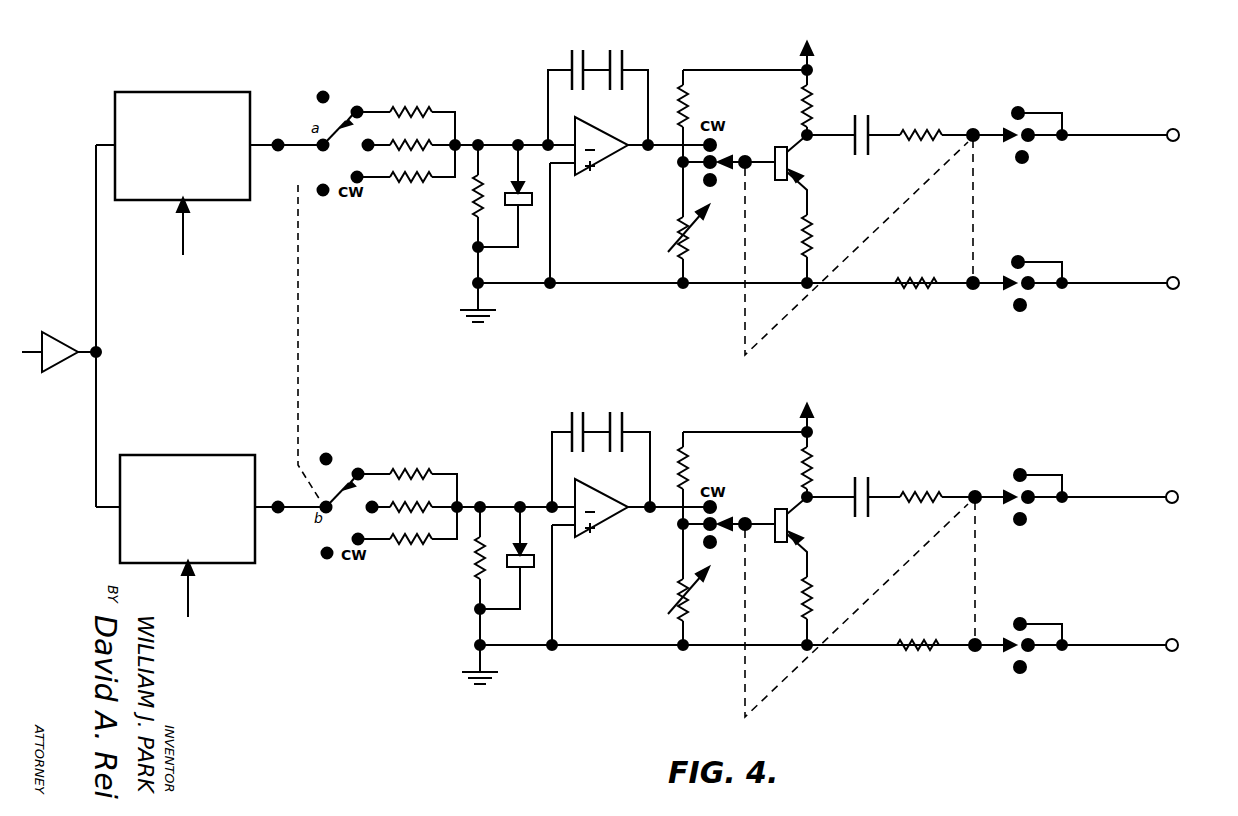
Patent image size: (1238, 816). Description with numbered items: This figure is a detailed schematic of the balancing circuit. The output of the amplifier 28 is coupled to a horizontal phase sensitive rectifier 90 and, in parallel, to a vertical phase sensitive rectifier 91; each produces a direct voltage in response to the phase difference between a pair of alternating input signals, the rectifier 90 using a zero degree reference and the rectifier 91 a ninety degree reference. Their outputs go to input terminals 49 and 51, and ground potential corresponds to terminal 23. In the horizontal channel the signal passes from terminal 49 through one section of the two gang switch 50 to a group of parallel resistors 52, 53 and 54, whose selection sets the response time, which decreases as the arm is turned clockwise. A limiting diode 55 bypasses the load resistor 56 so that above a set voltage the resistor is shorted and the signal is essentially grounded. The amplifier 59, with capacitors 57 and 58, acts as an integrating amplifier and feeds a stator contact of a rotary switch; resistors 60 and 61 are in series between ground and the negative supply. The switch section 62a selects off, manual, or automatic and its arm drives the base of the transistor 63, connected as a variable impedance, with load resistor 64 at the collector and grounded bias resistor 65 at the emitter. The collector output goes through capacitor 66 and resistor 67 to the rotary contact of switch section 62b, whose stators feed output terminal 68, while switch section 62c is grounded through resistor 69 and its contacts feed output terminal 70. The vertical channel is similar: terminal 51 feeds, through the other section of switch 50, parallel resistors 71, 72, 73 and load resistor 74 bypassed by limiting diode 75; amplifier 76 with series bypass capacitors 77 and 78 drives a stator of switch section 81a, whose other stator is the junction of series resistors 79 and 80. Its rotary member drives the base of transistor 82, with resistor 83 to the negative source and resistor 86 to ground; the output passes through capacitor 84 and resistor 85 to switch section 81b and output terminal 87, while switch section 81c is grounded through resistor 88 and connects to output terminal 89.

The ground terminal 23 is at (494, 313).
The amplifier 28 is at (60, 332).
The input terminal 49 is at (278, 140).
The two gang switch 50 is at (300, 178).
The input terminal 51 is at (278, 502).
The resistor 52 is at (428, 110).
The resistor 53 is at (428, 143).
The resistor 54 is at (412, 183).
The limiting diode 55 is at (515, 206).
The load resistor 56 is at (474, 205).
The capacitor 57 is at (571, 92).
The capacitor 58 is at (621, 92).
The amplifier 59 is at (604, 170).
The resistor 60 is at (687, 96).
The resistor 61 is at (675, 222).
The switch section 62a is at (748, 170).
The switch section 62b is at (1011, 149).
The switch section 62c is at (1008, 272).
The transistor 63 is at (789, 160).
The load resistor 64 is at (811, 95).
The bias resistor 65 is at (811, 226).
The capacitor 66 is at (870, 112).
The resistor 67 is at (930, 141).
The output terminal 68 is at (1178, 131).
The resistor 69 is at (920, 288).
The output terminal 70 is at (1178, 279).
The resistor 71 is at (428, 472).
The resistor 72 is at (428, 505).
The resistor 73 is at (412, 545).
The load resistor 74 is at (476, 567).
The limiting diode 75 is at (517, 568).
The amplifier 76 is at (604, 532).
The bypass capacitor 77 is at (580, 410).
The bypass capacitor 78 is at (627, 410).
The resistor 79 is at (687, 453).
The resistor 80 is at (678, 593).
The switch section 81a is at (748, 532).
The switch section 81b is at (1008, 510).
The switch section 81c is at (1010, 634).
The transistor 82 is at (789, 522).
The resistor 83 is at (811, 457).
The capacitor 84 is at (870, 474).
The resistor 85 is at (932, 490).
The resistor 86 is at (803, 600).
The output terminal 87 is at (1177, 493).
The resistor 88 is at (910, 650).
The output terminal 89 is at (1177, 641).
The horizontal phase sensitive rectifier 90 is at (205, 100).
The vertical phase sensitive rectifier 91 is at (210, 462).